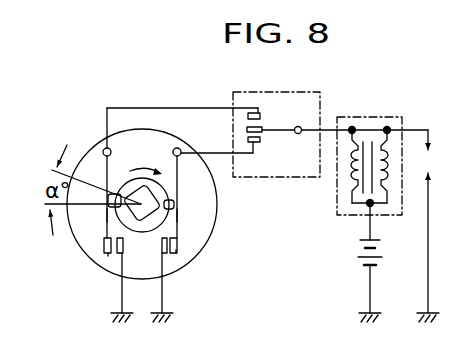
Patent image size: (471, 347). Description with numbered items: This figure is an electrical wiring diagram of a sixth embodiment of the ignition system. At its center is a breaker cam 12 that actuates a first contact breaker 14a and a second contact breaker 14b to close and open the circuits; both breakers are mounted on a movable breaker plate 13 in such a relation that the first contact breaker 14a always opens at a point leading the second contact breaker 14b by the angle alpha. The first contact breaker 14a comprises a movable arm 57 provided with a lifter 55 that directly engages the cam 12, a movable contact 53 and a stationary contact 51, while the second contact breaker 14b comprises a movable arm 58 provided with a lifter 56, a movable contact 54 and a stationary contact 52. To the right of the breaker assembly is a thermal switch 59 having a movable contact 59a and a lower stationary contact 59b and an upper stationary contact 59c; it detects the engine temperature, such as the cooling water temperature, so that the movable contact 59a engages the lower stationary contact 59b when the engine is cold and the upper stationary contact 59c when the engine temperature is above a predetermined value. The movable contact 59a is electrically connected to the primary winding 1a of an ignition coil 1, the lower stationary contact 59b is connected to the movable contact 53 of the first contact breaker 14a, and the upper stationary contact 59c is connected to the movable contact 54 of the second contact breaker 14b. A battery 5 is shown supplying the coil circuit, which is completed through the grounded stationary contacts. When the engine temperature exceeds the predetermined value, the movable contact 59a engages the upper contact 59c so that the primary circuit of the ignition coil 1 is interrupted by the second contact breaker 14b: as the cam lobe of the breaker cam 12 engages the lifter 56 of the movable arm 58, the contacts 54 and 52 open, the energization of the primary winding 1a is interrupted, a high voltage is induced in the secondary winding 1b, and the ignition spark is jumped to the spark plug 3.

The ignition coil 1 is at (363, 159).
The primary winding 1a is at (348, 177).
The secondary winding 1b is at (383, 189).
The spark plug 3 is at (431, 159).
The battery 5 is at (358, 249).
The breaker cam 12 is at (143, 218).
The movable breaker plate 13 is at (177, 134).
The first contact breaker 14a is at (180, 224).
The second contact breaker 14b is at (106, 256).
The stationary contact 51 is at (166, 257).
The stationary contact 52 is at (121, 256).
The movable contact 53 is at (176, 250).
The movable contact 54 is at (110, 258).
The lifter 55 is at (173, 203).
The lifter 56 is at (115, 193).
The movable arm 57 is at (178, 214).
The movable arm 58 is at (104, 222).
The thermal switch 59 is at (323, 92).
The movable contact 59a is at (262, 127).
The lower stationary contact 59b is at (259, 142).
The upper stationary contact 59c is at (258, 108).